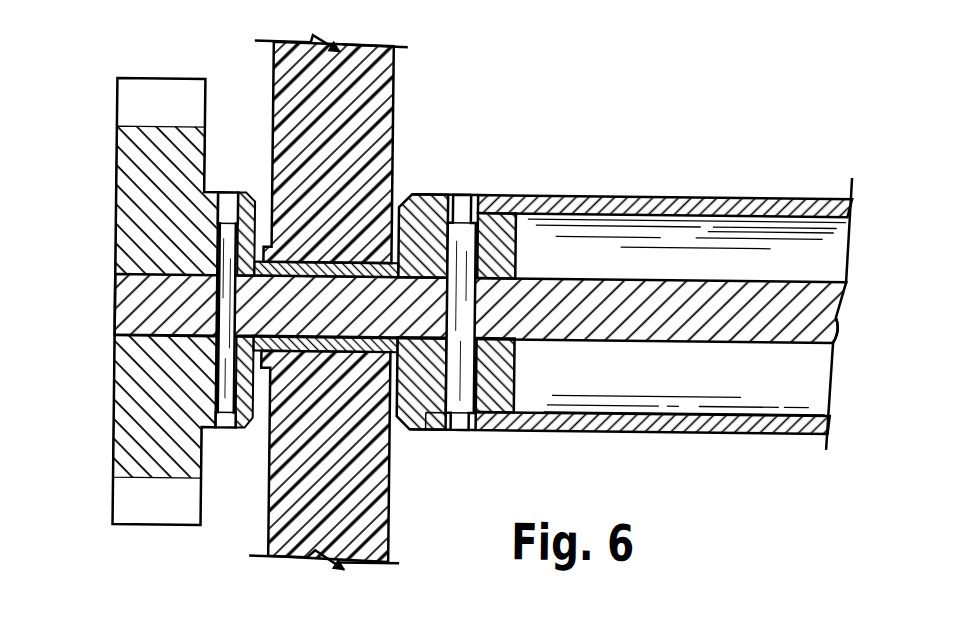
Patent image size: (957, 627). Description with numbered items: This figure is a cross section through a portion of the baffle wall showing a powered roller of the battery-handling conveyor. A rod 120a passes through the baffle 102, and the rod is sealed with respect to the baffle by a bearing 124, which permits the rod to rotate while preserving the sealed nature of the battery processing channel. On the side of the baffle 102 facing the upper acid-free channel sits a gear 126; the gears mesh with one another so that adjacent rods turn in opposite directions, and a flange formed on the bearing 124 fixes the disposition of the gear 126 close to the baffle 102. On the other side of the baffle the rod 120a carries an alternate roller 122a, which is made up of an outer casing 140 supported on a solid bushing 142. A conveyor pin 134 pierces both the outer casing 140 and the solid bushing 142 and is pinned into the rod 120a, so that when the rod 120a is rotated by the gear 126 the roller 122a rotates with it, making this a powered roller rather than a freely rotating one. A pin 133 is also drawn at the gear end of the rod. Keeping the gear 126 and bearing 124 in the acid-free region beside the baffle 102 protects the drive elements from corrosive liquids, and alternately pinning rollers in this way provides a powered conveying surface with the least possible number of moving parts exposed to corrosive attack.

The baffle 102 is at (383, 100).
The alternate rod 120a is at (125, 313).
The alternate roller 122a is at (704, 201).
The bearing 124 is at (264, 253).
The gear 126 is at (154, 97).
The pin 133 is at (227, 420).
The conveyor pin 134 is at (461, 421).
The outer casing 140 is at (581, 201).
The solid bushing 142 is at (412, 194).